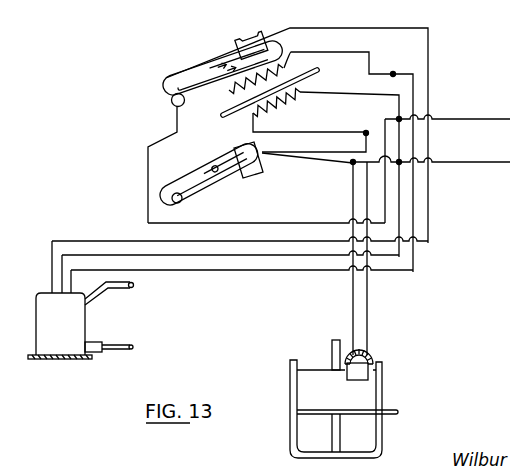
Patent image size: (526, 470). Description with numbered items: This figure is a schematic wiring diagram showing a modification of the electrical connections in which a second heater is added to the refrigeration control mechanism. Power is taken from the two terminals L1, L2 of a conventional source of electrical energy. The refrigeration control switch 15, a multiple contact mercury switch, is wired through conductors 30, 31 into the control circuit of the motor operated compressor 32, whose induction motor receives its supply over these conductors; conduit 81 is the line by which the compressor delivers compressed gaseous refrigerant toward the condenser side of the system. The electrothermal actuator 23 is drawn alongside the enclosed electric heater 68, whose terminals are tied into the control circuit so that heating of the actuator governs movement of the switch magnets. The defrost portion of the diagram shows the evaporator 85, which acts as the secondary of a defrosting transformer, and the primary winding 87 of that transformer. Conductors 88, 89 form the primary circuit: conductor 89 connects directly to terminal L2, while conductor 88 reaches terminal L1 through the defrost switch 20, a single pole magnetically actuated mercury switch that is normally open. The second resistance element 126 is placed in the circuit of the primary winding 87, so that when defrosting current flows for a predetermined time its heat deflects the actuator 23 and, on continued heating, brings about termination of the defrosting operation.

The refrigeration control switch 15 is at (181, 60).
The defrost switch 20 is at (205, 198).
The electrothermal actuator 23 is at (319, 72).
The conductor 30 is at (436, 43).
The conductor 31 is at (394, 72).
The motor operated compressor 32 is at (70, 343).
The enclosed electric heater 68 is at (291, 52).
The conduit 81 is at (117, 289).
The evaporator 85 is at (382, 403).
The primary winding 87 is at (369, 357).
The conductor 88 is at (352, 315).
The conductor 89 is at (368, 316).
The second resistance element 126 is at (253, 117).
The terminal of source of electrical energy L1 is at (492, 118).
The terminal of source of electrical energy L2 is at (485, 160).